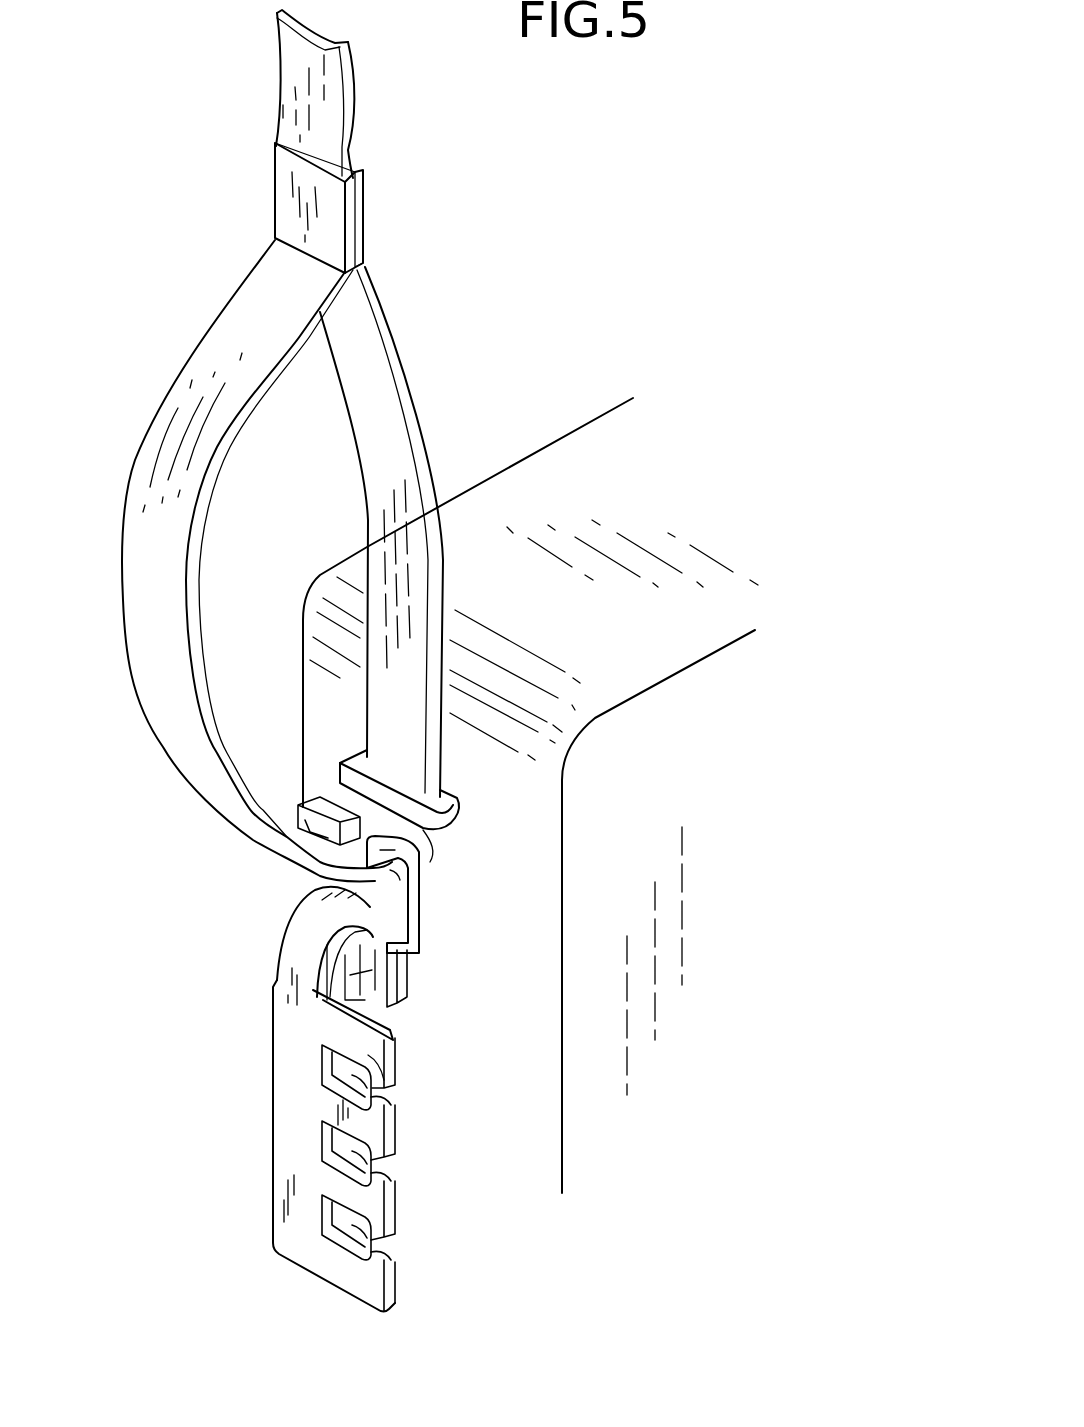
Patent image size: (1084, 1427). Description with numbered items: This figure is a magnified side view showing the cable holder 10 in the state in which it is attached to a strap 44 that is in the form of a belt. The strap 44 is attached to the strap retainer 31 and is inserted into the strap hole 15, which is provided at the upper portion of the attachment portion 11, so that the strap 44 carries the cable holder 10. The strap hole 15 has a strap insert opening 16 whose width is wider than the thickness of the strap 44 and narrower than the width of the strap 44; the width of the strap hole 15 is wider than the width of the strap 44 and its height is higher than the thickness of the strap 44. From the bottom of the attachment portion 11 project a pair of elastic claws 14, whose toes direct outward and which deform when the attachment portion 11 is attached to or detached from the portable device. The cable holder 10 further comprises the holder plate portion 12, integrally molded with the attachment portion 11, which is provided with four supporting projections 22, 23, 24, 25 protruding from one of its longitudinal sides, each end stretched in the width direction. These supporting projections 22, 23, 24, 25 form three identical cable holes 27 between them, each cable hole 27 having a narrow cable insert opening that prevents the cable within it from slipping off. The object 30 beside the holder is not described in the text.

The cable holder 10 is at (270, 990).
The attachment portion 11 is at (393, 920).
The holder plate portion 12 is at (344, 1144).
The claws 14 is at (393, 980).
The strap hole 15 is at (300, 880).
The strap insert opening 16 is at (353, 837).
The supporting projection 22 is at (370, 1047).
The supporting projection 23 is at (370, 1127).
The supporting projection 24 is at (370, 1203).
The supporting projection 25 is at (368, 1283).
The cable hole 27 is at (350, 1077).
The article (bag) 30 is at (490, 572).
The strap retainer 31 is at (445, 820).
The strap 44 is at (226, 348).